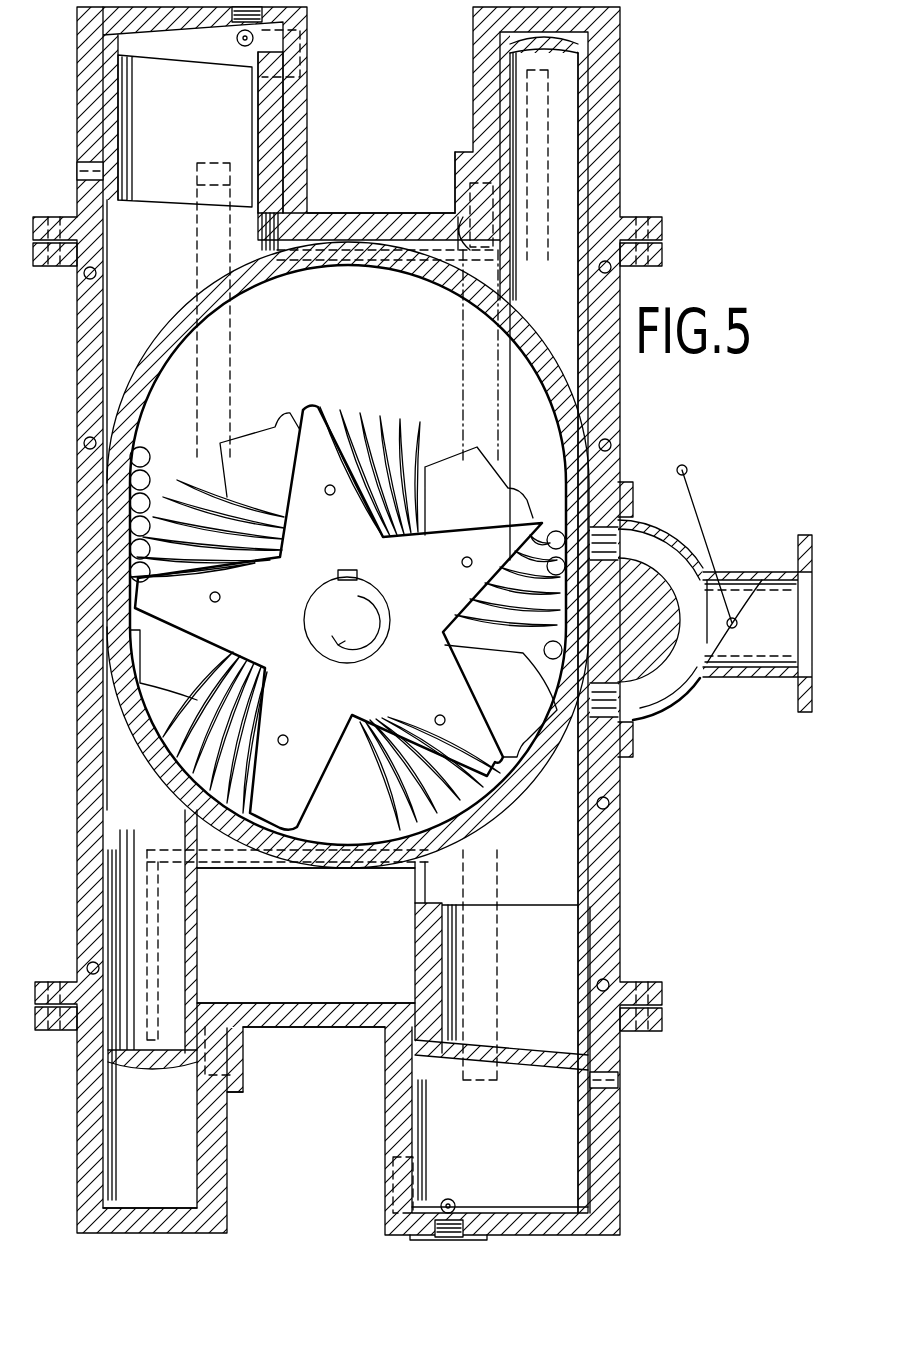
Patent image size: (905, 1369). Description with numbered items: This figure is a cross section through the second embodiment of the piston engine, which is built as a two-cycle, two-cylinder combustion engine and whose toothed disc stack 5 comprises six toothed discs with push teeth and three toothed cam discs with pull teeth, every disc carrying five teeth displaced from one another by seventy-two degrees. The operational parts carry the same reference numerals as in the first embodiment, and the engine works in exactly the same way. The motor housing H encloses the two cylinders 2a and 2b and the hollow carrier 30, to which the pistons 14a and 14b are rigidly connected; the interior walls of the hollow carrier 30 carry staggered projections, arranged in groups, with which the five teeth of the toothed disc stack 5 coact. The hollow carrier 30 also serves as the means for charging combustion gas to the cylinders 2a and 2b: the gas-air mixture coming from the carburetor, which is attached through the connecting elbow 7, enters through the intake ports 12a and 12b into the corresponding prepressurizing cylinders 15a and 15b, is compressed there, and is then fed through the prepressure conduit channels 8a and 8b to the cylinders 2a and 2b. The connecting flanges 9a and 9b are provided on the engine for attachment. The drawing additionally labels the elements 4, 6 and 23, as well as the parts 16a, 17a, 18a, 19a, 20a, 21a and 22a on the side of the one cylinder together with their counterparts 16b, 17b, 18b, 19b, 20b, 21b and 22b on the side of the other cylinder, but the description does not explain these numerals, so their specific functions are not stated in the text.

The motor housing H is at (88, 423).
The hollow carrier 30 is at (166, 345).
The stack of toothed discs 5 is at (408, 702).
The rotor shaft 6 is at (322, 618).
The balls / sealing elements 4 is at (550, 676).
The cylinder 2a is at (184, 40).
The prepressure conduit channel 8a is at (211, 223).
The connecting flange 9a is at (84, 173).
The piston 14a is at (294, 128).
The prepressurizing cylinder 15a is at (437, 255).
The upper cap 16a is at (540, 33).
The upper right cylinder 17a is at (584, 110).
The upper block 18a is at (470, 170).
The upper guide 19a is at (470, 246).
The upper stop 20a is at (262, 36).
The upper pivot 21a is at (242, 48).
The upper plug 22a is at (264, 17).
The intake port 12a is at (629, 522).
The intake port 12b is at (634, 729).
The valve lever 23 is at (737, 637).
The connecting elbow 7 is at (793, 674).
The cylinder 2b is at (575, 1147).
The prepressure conduit channel 8b is at (497, 1073).
The connecting flange 9b is at (606, 1086).
The piston 14b is at (584, 952).
The prepressurizing cylinder 15b is at (318, 990).
The lower chamber 16b is at (204, 1162).
The lower cylinder 17b is at (134, 1064).
The lower block 18b is at (238, 1068).
The lower guide 19b is at (257, 868).
The lower stop 20b is at (430, 1204).
The lower pivot 21b is at (451, 1198).
The lower plug 22b is at (470, 1212).